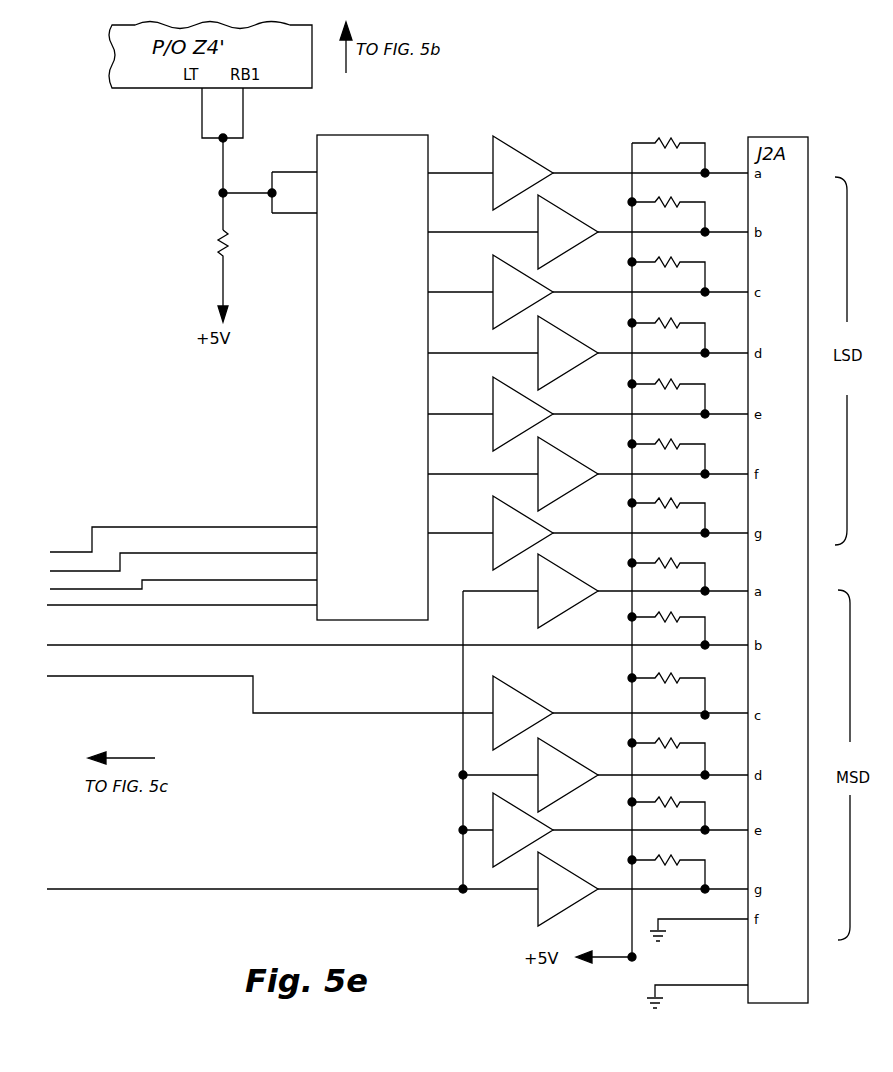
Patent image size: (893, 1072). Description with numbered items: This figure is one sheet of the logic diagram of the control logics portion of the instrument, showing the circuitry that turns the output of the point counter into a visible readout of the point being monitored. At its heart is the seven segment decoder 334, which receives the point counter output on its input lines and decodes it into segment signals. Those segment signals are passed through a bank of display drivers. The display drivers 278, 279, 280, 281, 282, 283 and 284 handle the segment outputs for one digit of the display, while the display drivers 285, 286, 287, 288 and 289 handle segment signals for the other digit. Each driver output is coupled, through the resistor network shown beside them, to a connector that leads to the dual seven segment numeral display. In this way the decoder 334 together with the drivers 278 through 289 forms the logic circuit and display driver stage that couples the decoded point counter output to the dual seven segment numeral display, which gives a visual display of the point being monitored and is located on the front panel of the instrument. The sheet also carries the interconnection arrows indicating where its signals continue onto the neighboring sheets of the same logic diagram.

The seven segment decoder 334 is at (425, 135).
The display driver 278 is at (528, 150).
The display driver 279 is at (574, 215).
The display driver 280 is at (491, 275).
The display driver 281 is at (572, 336).
The display driver 282 is at (490, 397).
The display driver 283 is at (572, 458).
The display driver 284 is at (490, 518).
The display driver 285 is at (585, 576).
The display driver 286 is at (540, 705).
The display driver 287 is at (583, 766).
The display driver 288 is at (547, 826).
The display driver 289 is at (573, 874).